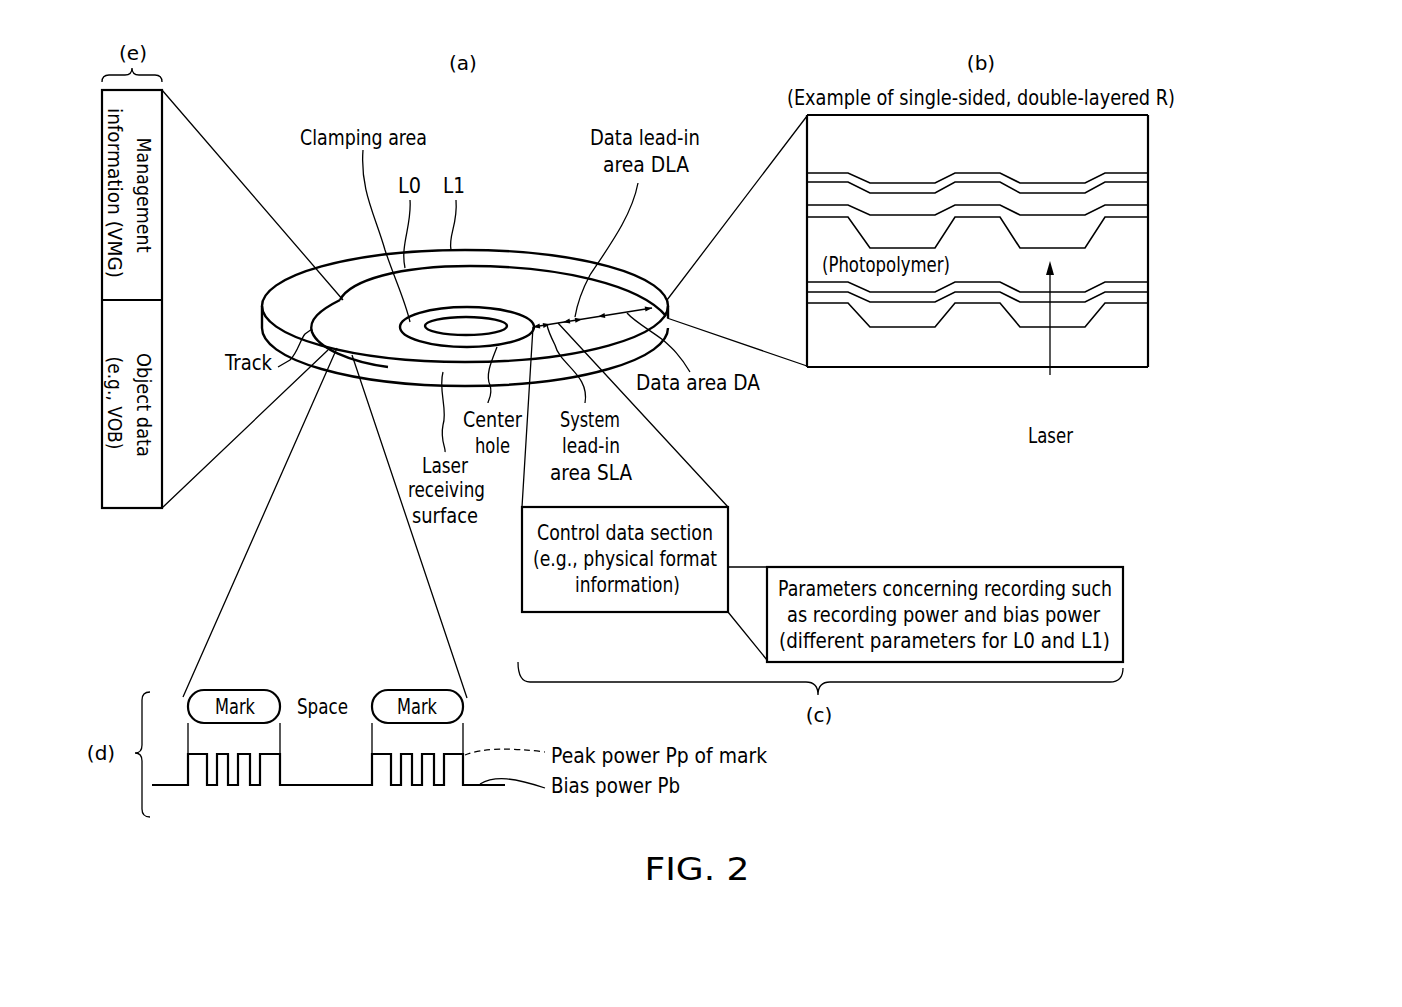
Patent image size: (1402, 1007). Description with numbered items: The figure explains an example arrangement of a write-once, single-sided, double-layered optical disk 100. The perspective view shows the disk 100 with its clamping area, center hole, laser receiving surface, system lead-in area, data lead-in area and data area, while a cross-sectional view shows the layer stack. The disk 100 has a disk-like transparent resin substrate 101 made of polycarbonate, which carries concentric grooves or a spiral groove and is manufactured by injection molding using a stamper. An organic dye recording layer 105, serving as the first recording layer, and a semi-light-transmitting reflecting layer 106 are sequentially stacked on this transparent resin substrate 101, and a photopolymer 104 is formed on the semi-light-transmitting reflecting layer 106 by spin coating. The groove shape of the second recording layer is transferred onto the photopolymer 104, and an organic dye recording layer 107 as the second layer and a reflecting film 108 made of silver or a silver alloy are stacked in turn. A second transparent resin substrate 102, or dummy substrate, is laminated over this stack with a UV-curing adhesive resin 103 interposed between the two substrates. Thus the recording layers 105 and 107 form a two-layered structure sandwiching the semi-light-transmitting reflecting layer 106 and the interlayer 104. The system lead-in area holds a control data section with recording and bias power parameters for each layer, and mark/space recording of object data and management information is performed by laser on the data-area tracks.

The optical disk 100 is at (494, 192).
The transparent resin substrate 101 is at (281, 283).
The transparent resin substrate (dummy substrate) 102 is at (311, 270).
The UV-curing resin (adhesive layer) 103 is at (534, 253).
The photopolymer (interlayer) 104 is at (1137, 250).
The organic dye recording layer (first layer L0) 105 is at (1140, 297).
The semi-light-transmitting reflecting layer 106 is at (1150, 285).
The organic dye recording layer (second layer L1) 107 is at (1140, 210).
The reflecting film 108 is at (1140, 186).